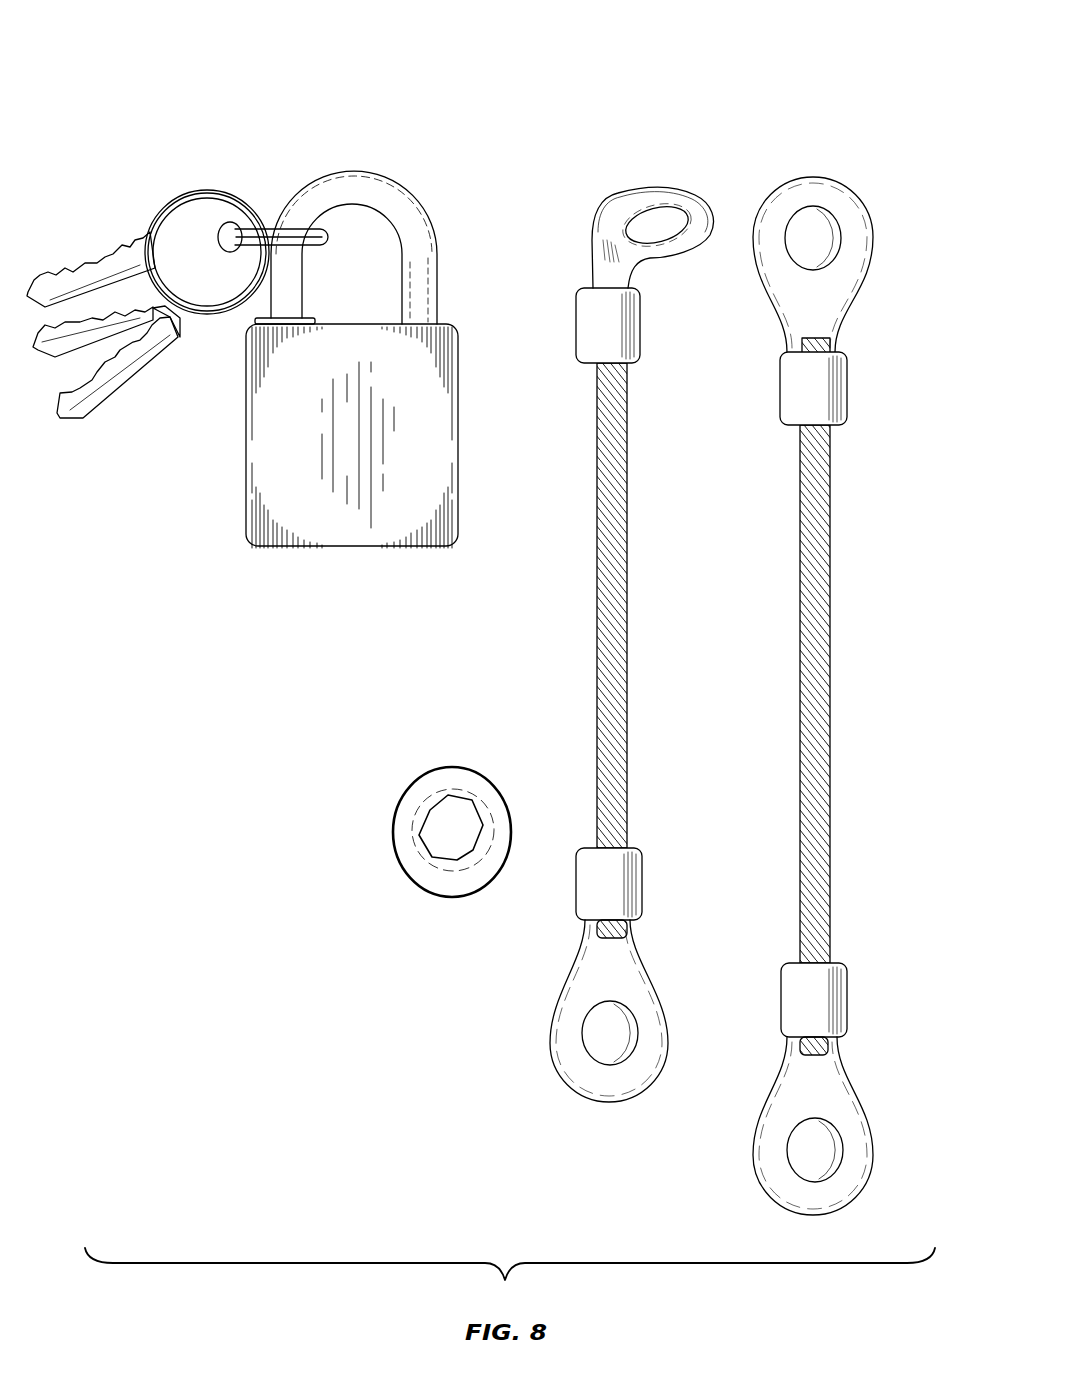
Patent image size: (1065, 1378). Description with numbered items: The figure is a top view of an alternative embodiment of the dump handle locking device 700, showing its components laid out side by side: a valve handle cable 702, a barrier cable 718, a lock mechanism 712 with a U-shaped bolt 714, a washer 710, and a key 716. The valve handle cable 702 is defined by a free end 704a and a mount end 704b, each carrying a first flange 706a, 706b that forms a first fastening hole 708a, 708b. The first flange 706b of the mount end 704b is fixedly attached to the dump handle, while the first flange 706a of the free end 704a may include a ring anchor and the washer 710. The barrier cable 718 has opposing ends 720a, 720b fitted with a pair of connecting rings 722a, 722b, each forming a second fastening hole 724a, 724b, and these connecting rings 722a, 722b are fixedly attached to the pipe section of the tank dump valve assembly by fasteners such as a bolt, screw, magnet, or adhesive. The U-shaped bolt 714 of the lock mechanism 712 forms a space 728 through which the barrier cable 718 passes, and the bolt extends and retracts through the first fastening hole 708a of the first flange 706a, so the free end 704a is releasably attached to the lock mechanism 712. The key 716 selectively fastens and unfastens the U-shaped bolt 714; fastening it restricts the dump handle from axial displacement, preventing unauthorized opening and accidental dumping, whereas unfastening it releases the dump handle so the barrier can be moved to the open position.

The security tether system 700 is at (131, 50).
The valve handle cable 702 is at (805, 612).
The free end 704a is at (790, 403).
The mount end 704b is at (835, 995).
The first flange 706a is at (816, 183).
The first flange 706b is at (840, 1100).
The first fastening hole 708a is at (827, 245).
The first fastening hole 708b is at (808, 1150).
The washer 710 is at (407, 837).
The lock mechanism 712 is at (257, 488).
The U-shaped bolt 714 is at (355, 178).
The key 716 is at (176, 218).
The barrier cable 718 is at (597, 620).
The opposing end 720a is at (584, 325).
The opposing end 720b is at (630, 878).
The connecting ring 722a is at (660, 187).
The connecting ring 722b is at (637, 982).
The second fastening hole 724a is at (655, 220).
The second fastening hole 724b is at (603, 1033).
The space 728 is at (371, 243).